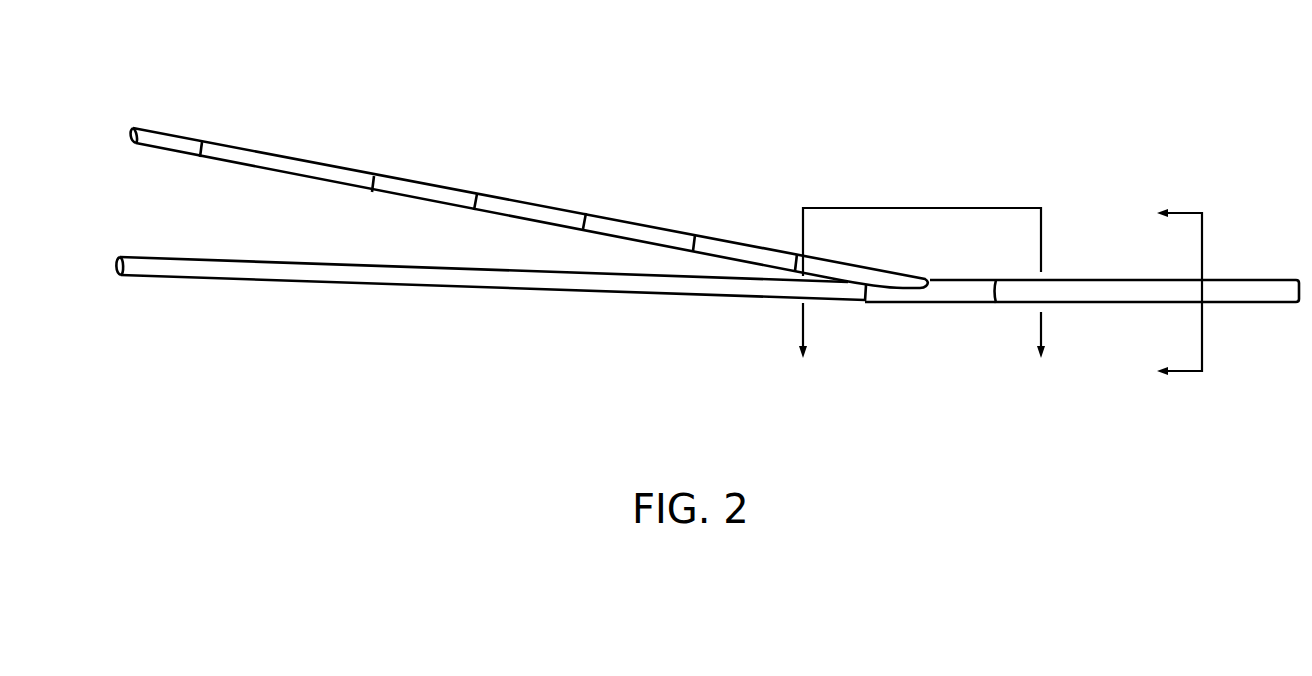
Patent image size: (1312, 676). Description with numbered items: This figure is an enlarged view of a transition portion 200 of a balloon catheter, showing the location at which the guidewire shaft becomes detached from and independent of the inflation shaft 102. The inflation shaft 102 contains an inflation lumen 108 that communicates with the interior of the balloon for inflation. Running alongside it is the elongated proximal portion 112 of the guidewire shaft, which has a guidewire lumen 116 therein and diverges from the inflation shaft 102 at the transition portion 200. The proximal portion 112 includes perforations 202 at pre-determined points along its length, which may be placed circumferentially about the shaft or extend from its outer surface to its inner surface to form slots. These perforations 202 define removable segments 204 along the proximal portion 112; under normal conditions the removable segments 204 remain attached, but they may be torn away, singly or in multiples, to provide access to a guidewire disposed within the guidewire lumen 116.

The transition portion 200 is at (814, 103).
The inflation shaft 102 is at (337, 285).
The inflation lumen 108 is at (485, 279).
The proximal portion 112 is at (432, 160).
The guidewire lumen 116 is at (208, 143).
The perforations 202 is at (694, 235).
The removable segments 204 is at (524, 206).